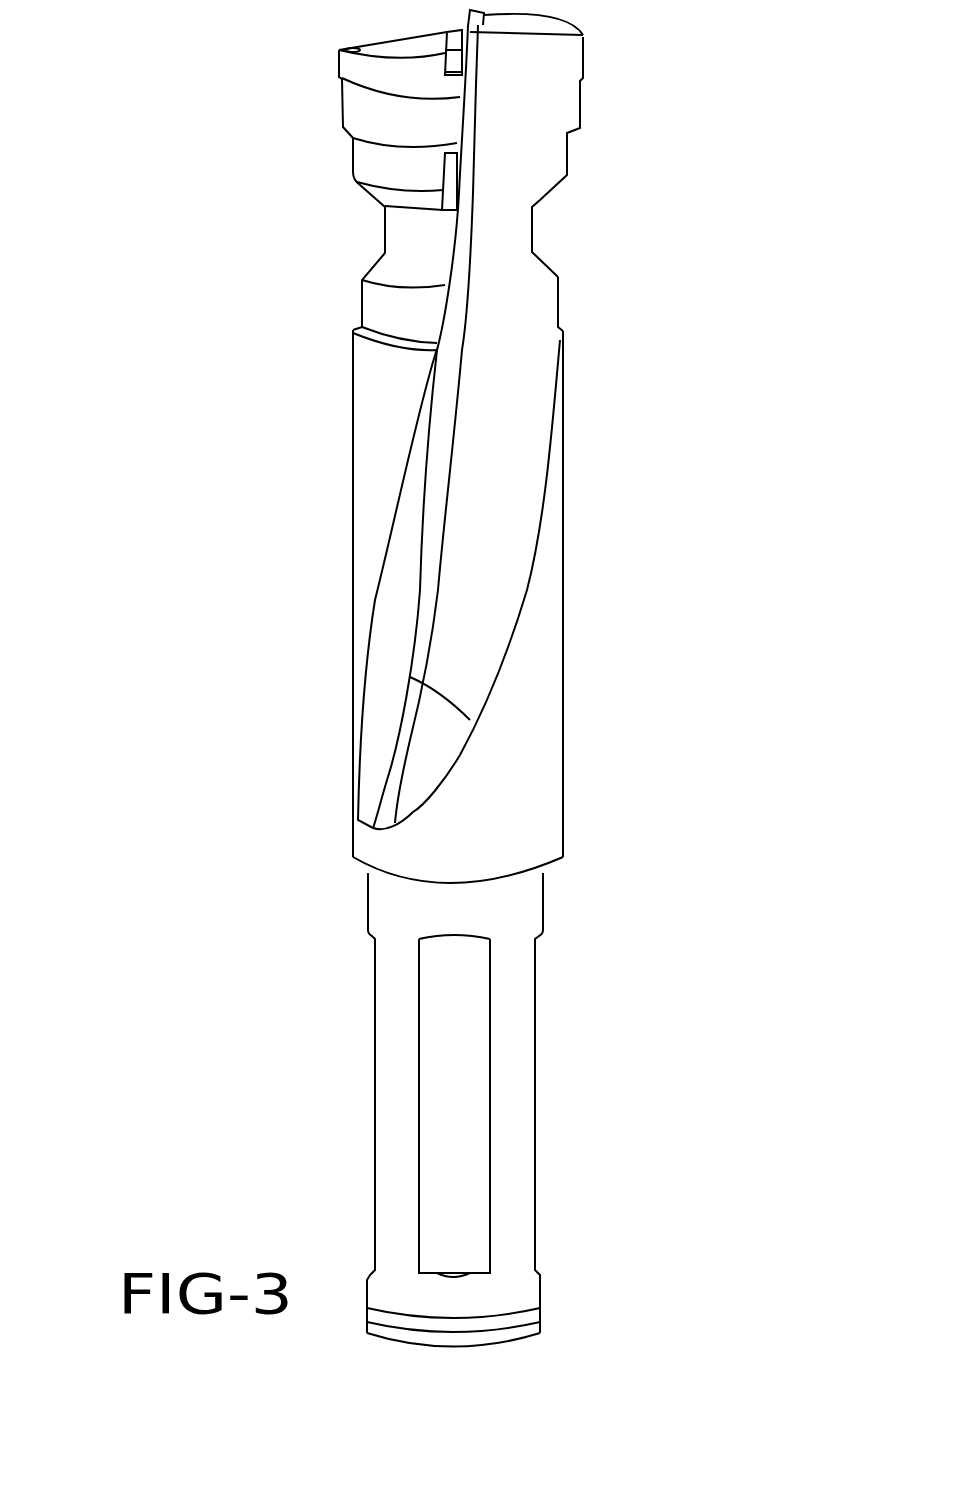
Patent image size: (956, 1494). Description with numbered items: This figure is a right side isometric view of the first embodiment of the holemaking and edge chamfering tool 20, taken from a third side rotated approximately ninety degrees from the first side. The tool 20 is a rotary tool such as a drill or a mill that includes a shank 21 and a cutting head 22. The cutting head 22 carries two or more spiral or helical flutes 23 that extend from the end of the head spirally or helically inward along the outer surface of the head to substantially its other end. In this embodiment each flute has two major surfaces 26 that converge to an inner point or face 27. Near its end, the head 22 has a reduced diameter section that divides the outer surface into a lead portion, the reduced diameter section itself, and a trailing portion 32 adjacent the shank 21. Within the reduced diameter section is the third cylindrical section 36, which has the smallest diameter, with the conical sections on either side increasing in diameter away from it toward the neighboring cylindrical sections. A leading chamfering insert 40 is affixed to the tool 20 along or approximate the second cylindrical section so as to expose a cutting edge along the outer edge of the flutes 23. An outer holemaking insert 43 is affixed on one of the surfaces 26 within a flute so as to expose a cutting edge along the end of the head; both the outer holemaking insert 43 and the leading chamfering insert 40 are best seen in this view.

The tool 20 is at (265, 515).
The shank 21 is at (535, 1105).
The cutting head 22 is at (350, 785).
The helical flutes 23 is at (527, 413).
The major surfaces 26 is at (383, 643).
The inner point or face 27 is at (430, 545).
The trailing portion 32 is at (537, 787).
The third cylindrical section 36 is at (385, 228).
The leading chamfering insert 40 is at (455, 172).
The outer holemaking insert 43 is at (577, 34).